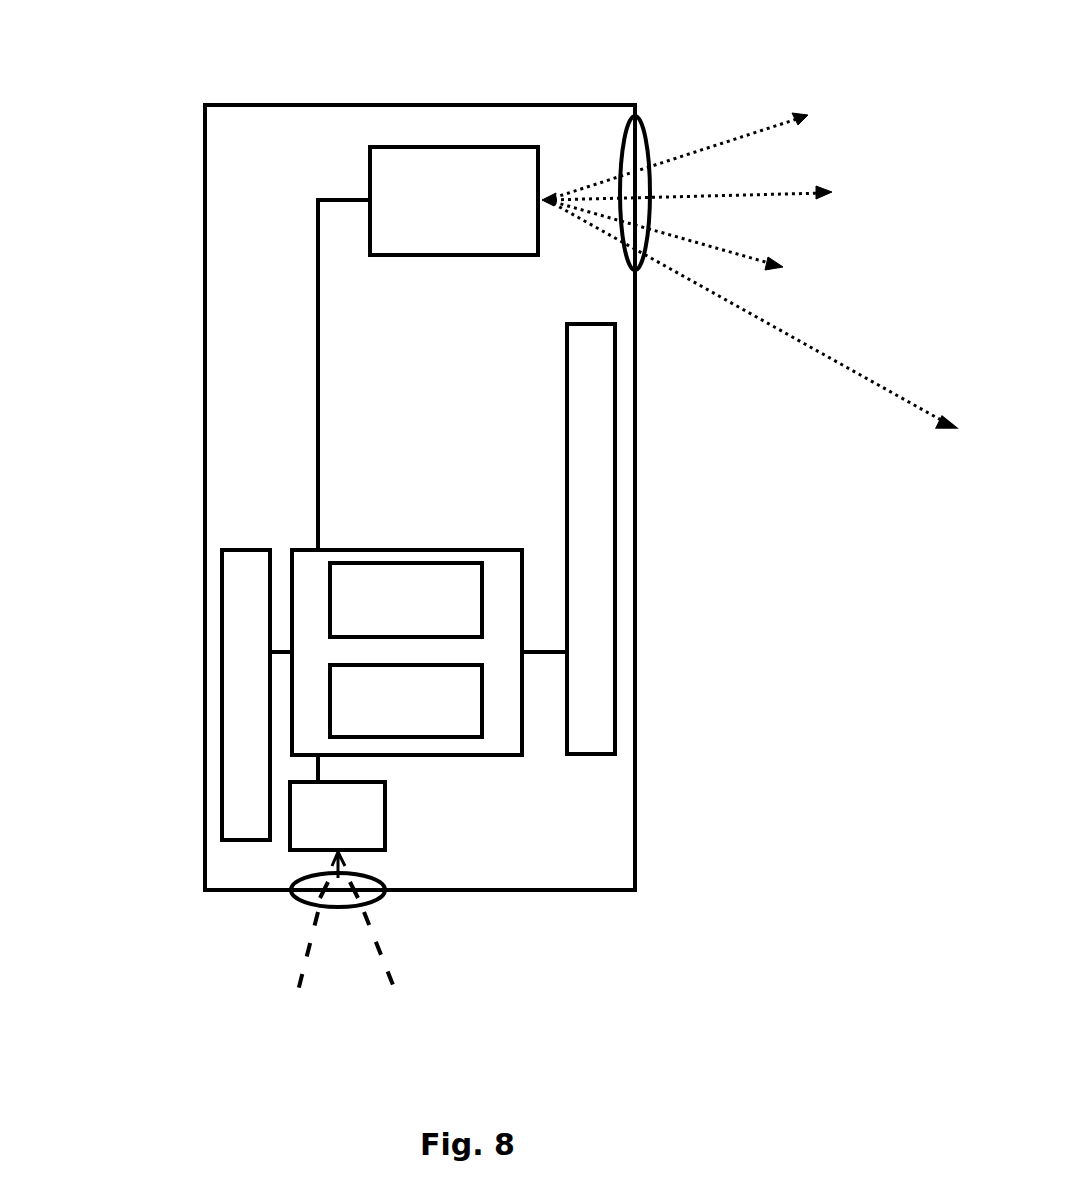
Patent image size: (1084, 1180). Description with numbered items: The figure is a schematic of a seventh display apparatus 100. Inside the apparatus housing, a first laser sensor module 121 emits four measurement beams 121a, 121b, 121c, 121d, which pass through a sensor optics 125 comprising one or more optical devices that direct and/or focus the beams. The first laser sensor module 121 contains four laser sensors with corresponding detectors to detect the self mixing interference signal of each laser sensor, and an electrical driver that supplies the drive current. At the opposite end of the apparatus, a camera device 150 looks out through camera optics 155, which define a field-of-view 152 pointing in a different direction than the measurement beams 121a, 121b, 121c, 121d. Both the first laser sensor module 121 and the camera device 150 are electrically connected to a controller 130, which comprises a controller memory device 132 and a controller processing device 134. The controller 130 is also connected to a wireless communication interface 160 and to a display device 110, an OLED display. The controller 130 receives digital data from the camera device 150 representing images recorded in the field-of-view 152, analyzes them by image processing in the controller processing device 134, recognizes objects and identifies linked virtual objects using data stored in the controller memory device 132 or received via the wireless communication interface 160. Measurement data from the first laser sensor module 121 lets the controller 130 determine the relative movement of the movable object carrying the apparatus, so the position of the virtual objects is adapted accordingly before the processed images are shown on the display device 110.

The seventh display apparatus 100 is at (205, 403).
The display device 110 is at (615, 510).
The first laser sensor module 121 is at (475, 257).
The measurement beam 121a is at (765, 120).
The measurement beam 121b is at (795, 193).
The measurement beam 121c is at (785, 268).
The measurement beam 121d is at (893, 400).
The sensor optics 125 is at (648, 120).
The controller 130 is at (375, 616).
The controller memory device 132 is at (406, 600).
The controller processing device 134 is at (406, 701).
The camera device 150 is at (385, 810).
The field-of-view 152 is at (385, 955).
The camera optics 155 is at (385, 890).
The wireless communication interface 160 is at (222, 722).